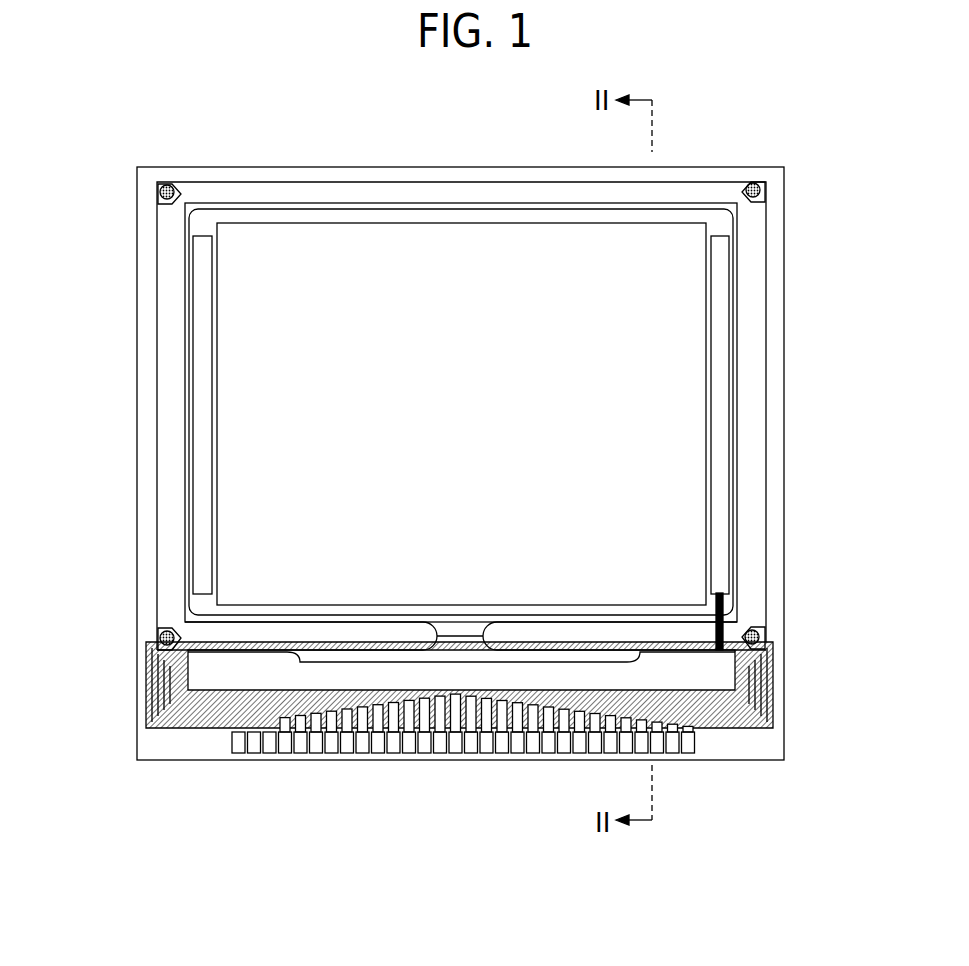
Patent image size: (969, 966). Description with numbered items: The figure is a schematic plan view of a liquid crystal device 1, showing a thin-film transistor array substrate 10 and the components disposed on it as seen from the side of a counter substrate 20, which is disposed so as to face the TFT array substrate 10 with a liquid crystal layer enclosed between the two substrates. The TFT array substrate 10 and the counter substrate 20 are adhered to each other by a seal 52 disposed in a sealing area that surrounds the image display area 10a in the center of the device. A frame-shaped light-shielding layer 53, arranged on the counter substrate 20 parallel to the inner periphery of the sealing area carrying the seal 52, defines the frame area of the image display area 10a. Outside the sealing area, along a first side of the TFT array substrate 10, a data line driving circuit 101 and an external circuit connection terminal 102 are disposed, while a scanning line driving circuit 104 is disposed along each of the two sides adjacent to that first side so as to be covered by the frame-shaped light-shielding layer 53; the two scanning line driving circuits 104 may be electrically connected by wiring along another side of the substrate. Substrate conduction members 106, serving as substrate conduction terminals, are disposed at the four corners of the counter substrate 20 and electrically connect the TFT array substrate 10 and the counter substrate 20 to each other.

The liquid crystal device 1 is at (729, 105).
The TFT array substrate 10 is at (273, 175).
The image display area 10a is at (262, 363).
The counter substrate 20 is at (485, 180).
The seal 52 is at (753, 340).
The frame-shaped light-shielding layer 53 is at (730, 593).
The data line driving circuit 101 is at (213, 680).
The external circuit connection terminal 102 is at (425, 737).
The scanning line driving circuit 104 is at (725, 415).
The substrate conduction member 106 is at (180, 187).